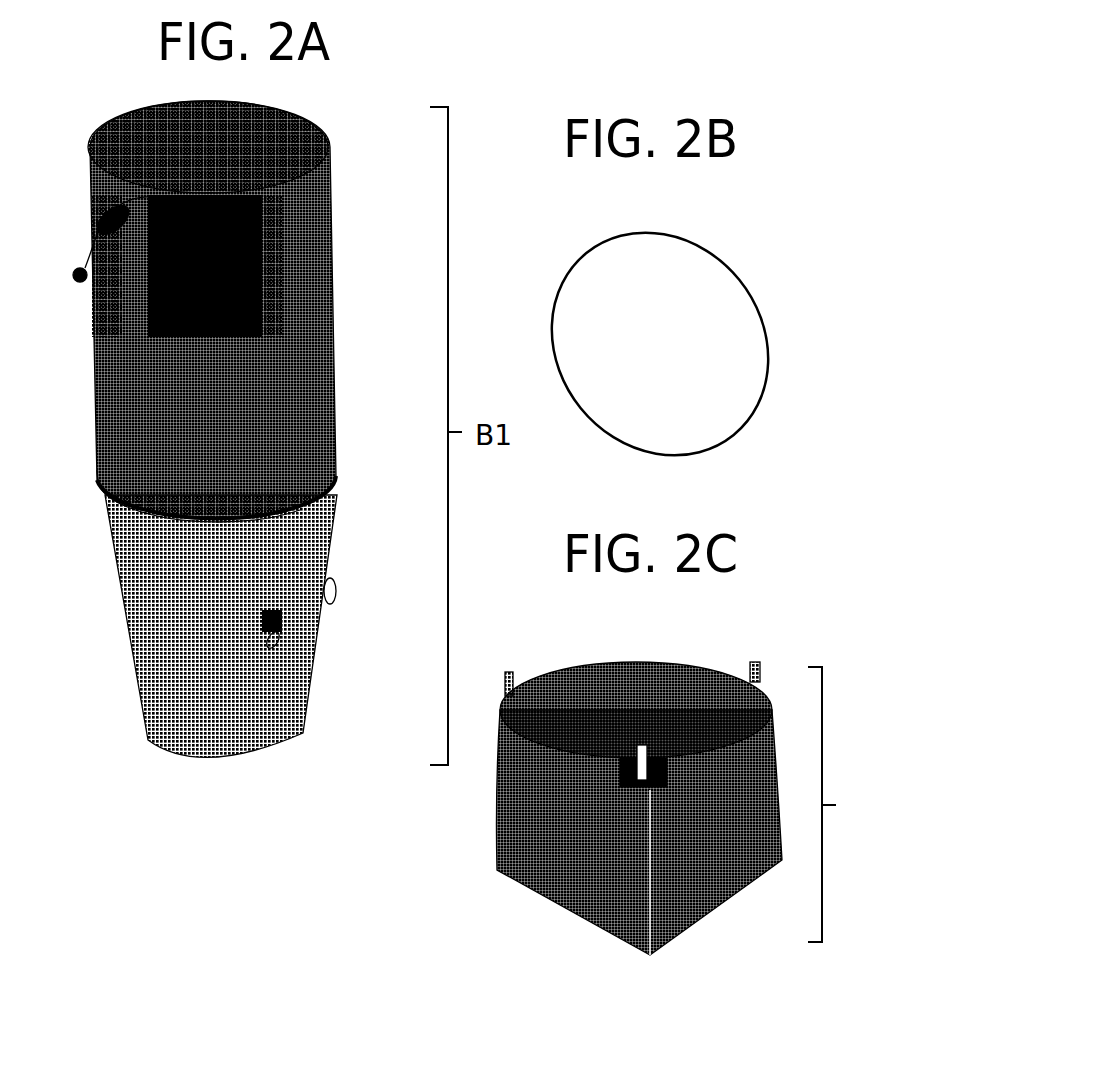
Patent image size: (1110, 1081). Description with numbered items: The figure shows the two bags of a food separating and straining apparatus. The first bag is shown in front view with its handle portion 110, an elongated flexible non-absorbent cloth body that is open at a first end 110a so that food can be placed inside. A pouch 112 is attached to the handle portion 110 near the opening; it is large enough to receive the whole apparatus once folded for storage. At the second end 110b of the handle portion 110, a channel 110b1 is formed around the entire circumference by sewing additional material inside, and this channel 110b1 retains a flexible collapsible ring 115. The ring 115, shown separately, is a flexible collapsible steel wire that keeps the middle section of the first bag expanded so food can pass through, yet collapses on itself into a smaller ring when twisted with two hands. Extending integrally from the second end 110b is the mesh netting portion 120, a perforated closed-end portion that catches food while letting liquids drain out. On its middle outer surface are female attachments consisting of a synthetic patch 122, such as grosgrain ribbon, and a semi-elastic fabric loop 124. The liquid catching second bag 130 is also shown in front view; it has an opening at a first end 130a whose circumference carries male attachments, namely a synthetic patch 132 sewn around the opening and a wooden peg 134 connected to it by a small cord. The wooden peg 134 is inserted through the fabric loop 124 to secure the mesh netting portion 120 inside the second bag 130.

In FIG. 2A, the handle portion 110 is at (333, 296).
In FIG. 2A, the first end 110a is at (268, 162).
In FIG. 2A, the second end 110b is at (210, 527).
In FIG. 2A, the channel 110b1 is at (107, 500).
In FIG. 2A, the pouch 112 is at (172, 304).
In FIG. 2A, the flexible collapsible ring 115 is at (337, 485).
In FIG. 2B, the flexible collapsible ring 115 is at (745, 262).
In FIG. 2A, the mesh netting portion 120 is at (318, 553).
In FIG. 2A, the synthetic patch 122 is at (132, 582).
In FIG. 2A, the fabric loop 124 is at (330, 612).
In FIG. 2C, the second bag 130 is at (655, 777).
In FIG. 2C, the first end 130a is at (613, 723).
In FIG. 2C, the synthetic patch 132 is at (672, 786).
In FIG. 2C, the wooden peg 134 is at (669, 777).